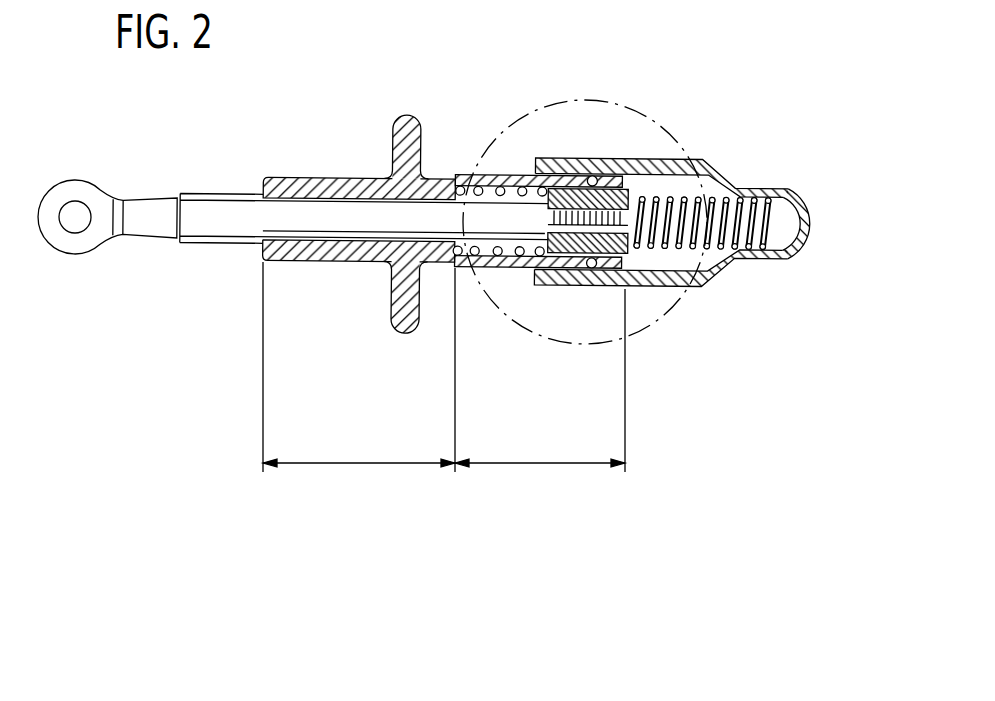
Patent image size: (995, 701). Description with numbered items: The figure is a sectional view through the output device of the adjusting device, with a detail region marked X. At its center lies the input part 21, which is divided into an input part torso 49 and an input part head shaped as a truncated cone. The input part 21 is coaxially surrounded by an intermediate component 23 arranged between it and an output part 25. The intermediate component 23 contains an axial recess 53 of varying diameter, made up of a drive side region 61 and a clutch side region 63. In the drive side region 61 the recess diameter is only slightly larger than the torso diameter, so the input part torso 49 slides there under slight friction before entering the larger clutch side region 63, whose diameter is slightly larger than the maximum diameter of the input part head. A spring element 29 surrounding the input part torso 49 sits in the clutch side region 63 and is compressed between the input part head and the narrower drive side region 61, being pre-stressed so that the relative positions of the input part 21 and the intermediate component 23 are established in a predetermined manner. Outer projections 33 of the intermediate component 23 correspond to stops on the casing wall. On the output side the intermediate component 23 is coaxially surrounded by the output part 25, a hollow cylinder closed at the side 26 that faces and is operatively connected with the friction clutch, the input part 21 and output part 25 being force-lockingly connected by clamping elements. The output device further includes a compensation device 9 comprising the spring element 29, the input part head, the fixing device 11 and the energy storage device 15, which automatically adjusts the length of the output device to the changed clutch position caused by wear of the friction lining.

The compensation device 9 is at (585, 160).
The fixing device 11 is at (590, 289).
The energy storage device 15 is at (705, 192).
The input part 21 is at (212, 203).
The intermediate component 23 is at (322, 188).
The output part 25 is at (717, 167).
The side 26 is at (805, 257).
The spring element 29 is at (510, 178).
The outer projections 33 is at (405, 336).
The input part torso 49 is at (330, 230).
The axial recess 53 is at (365, 207).
The drive side region 61 is at (359, 461).
The clutch side region 63 is at (545, 461).
The detail circle X is at (652, 333).